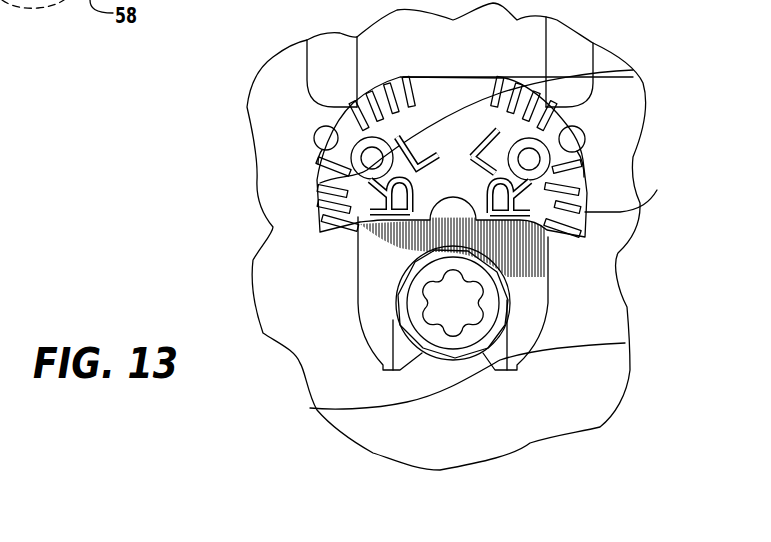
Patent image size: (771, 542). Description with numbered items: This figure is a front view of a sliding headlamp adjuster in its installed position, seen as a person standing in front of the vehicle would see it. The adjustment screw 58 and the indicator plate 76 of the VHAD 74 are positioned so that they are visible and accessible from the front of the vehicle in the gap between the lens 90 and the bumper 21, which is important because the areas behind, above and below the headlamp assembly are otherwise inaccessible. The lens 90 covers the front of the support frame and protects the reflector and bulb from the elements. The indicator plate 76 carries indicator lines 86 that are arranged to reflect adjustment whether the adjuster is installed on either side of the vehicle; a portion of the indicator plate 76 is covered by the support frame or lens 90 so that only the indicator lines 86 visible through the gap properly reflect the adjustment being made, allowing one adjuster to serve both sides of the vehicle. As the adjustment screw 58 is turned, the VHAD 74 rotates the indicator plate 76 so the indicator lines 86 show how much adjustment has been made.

The bumper 21 is at (570, 407).
The adjustment screw 58 is at (405, 320).
The VHAD 74 is at (566, 118).
The indicator plate 76 is at (318, 224).
The indicator lines 86 is at (588, 193).
The lens 90 is at (278, 157).